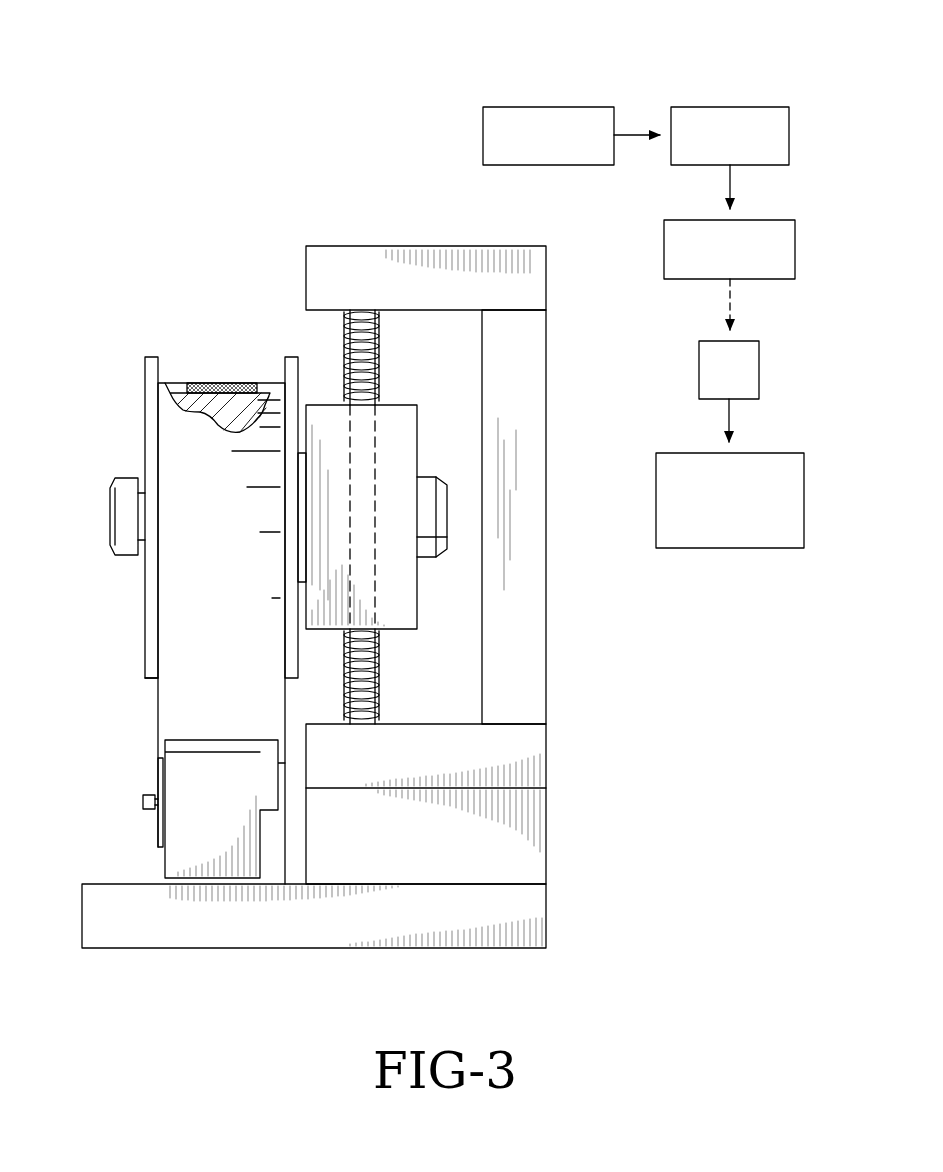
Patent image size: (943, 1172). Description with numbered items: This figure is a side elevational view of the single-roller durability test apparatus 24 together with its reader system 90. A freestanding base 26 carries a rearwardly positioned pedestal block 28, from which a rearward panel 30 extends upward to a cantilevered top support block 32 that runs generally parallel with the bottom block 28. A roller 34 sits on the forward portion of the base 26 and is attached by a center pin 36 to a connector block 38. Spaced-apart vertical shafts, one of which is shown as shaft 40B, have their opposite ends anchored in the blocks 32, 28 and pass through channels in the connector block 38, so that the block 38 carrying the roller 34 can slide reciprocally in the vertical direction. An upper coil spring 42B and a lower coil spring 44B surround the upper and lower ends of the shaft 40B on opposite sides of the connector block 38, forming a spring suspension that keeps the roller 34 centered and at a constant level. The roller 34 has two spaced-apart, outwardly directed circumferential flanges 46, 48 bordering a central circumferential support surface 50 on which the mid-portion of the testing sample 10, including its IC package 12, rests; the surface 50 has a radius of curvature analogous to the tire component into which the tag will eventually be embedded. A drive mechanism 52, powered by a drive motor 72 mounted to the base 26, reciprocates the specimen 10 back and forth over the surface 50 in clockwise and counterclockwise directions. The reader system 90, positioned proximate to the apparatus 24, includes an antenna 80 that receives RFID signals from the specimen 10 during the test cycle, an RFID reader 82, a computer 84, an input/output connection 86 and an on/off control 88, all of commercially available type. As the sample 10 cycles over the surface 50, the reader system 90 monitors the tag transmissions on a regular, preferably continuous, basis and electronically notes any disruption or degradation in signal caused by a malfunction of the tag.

The testing sample 10 is at (222, 490).
The IC package 12 is at (230, 387).
The test apparatus 24 is at (178, 212).
The base 26 is at (307, 948).
The pedestal block 28 is at (488, 752).
The rearward panel 30 is at (517, 368).
The top support block 32 is at (323, 273).
The roller 34 is at (140, 681).
The center pin 36 is at (435, 515).
The connector block 38 is at (400, 433).
The vertical shaft 40B is at (362, 375).
The upper coil spring 42B is at (360, 337).
The lower coil spring 44B is at (360, 667).
The flange 46 is at (155, 368).
The flange 48 is at (290, 368).
The central circumferential support surface 50 is at (217, 405).
The drive mechanism 52 is at (143, 812).
The drive motor 72 is at (208, 817).
The antenna 80 is at (543, 107).
The RFID reader 82 is at (728, 107).
The computer 84 is at (768, 220).
The input/output connection 86 is at (760, 368).
The on/off control 88 is at (775, 453).
The reader system 90 is at (480, 83).